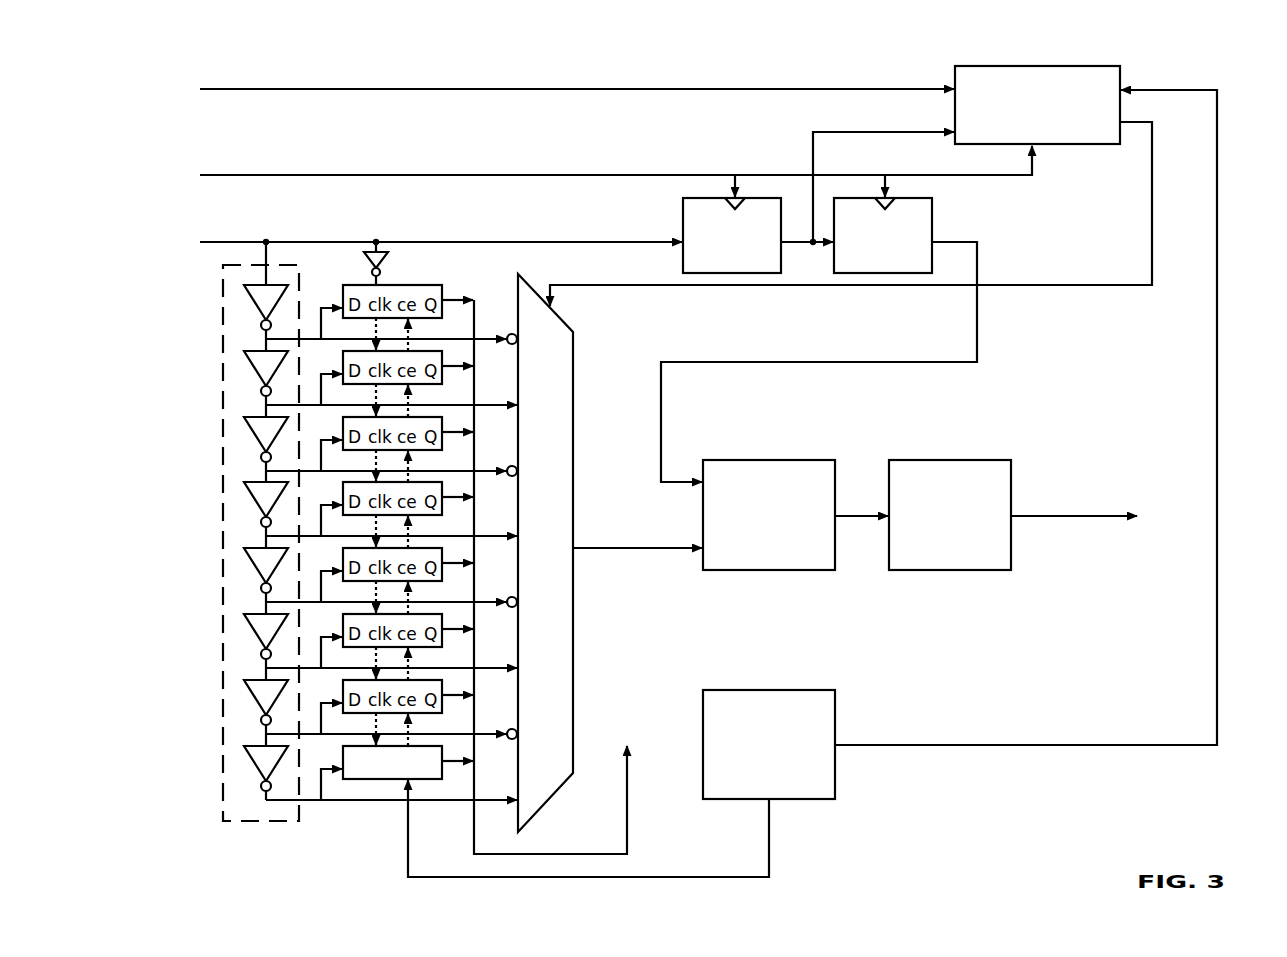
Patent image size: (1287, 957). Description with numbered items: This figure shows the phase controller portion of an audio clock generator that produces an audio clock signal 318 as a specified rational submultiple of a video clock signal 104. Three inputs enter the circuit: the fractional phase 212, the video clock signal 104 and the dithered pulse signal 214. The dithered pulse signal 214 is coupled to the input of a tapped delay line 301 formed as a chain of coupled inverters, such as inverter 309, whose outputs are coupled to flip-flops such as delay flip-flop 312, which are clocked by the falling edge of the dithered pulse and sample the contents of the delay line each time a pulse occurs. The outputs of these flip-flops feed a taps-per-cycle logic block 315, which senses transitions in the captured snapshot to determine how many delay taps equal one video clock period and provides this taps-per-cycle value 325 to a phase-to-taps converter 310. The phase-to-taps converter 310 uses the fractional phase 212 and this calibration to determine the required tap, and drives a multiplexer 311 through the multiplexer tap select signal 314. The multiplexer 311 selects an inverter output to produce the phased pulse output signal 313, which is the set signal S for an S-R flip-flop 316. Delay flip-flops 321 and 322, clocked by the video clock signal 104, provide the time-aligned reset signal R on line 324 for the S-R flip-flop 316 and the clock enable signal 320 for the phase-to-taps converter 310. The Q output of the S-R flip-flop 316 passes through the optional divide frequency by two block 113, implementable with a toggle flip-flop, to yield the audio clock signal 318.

The fractional phase 212 is at (423, 92).
The video clock signal 104 is at (568, 173).
The dithered pulse signal 214 is at (480, 240).
The inverter 309 is at (252, 310).
The delay line 301 is at (224, 531).
The delay flip-flop 312 is at (382, 782).
The multiplexer 311 is at (576, 381).
The phased pulse output signal 313 is at (687, 552).
The S-R flip-flop 316 is at (773, 458).
The divide frequency by 2 block 113 is at (969, 458).
The audio clock signal 318 is at (1070, 513).
The taps-per-cycle logic block 315 is at (773, 688).
The taps-per-cycle value 325 is at (1128, 742).
The clock enable signal 320 is at (809, 151).
The delay flip-flop 321 is at (787, 275).
The delay flip-flop 322 is at (879, 280).
The phase-to-taps converter 310 is at (1095, 148).
The multiplexer tap select signal 314 is at (1149, 201).
The reset signal line 324 is at (691, 366).